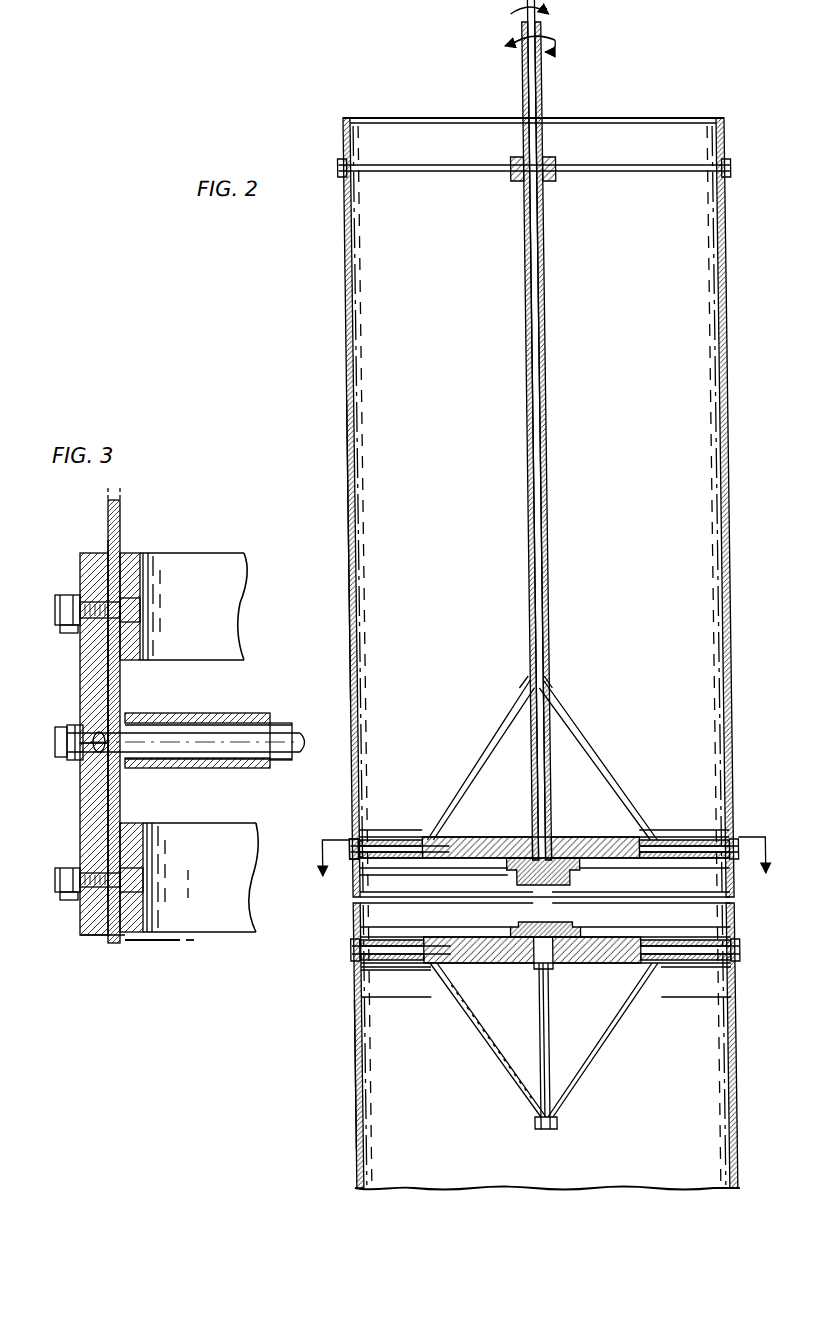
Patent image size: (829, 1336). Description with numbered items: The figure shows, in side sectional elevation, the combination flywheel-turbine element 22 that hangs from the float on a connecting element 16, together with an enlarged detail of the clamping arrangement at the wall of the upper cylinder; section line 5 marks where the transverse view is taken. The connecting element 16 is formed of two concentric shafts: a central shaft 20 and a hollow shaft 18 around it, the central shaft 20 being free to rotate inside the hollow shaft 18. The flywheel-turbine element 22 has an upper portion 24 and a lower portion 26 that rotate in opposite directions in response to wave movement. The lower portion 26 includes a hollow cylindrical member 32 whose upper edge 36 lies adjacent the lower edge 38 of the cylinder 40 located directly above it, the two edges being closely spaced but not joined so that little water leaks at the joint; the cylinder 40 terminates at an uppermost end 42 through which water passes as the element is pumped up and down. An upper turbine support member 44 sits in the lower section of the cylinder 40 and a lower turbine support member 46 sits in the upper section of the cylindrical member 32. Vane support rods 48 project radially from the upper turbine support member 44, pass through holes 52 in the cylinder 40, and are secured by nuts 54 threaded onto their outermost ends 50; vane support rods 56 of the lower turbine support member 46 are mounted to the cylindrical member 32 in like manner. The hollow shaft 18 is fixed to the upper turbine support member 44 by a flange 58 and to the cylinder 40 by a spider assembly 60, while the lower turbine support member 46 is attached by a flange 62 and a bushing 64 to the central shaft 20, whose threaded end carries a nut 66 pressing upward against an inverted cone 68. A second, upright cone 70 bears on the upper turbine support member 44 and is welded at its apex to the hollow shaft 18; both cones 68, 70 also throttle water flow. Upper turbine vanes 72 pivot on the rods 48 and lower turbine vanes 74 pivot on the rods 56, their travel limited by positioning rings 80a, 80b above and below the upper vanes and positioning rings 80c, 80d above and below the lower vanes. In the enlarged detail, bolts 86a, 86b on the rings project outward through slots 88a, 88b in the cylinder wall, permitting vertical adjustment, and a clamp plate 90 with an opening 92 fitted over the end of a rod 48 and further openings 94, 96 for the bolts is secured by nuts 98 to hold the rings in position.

In FIG. 2, the connecting element 16 is at (549, 34).
In FIG. 2, the hollow shaft 18 is at (542, 101).
In FIG. 2, the central shaft 20 is at (534, 200).
In FIG. 2, the flywheel-turbine element 22 is at (717, 84).
In FIG. 2, the upper portion 24 is at (343, 457).
In FIG. 3, the upper portion 24 is at (90, 507).
In FIG. 2, the lower portion 26 is at (343, 1160).
In FIG. 2, the cylindrical member 32 is at (340, 1063).
In FIG. 2, the upper edge 36 is at (344, 920).
In FIG. 2, the lower edge 38 is at (342, 888).
In FIG. 3, the lower edge 38 is at (145, 945).
In FIG. 2, the cylinder 40 is at (342, 651).
In FIG. 3, the cylinder 40 is at (120, 538).
In FIG. 2, the uppermost end 42 is at (340, 159).
In FIG. 2, the upper turbine support member 44 is at (576, 825).
In FIG. 2, the lower turbine support member 46 is at (626, 963).
In FIG. 2, the vane support rods 48 is at (438, 850).
In FIG. 3, the vane support rods 48 is at (292, 746).
In FIG. 3, the outermost end 50 is at (60, 752).
In FIG. 2, the holes 52 is at (338, 865).
In FIG. 3, the holes 52 is at (99, 743).
In FIG. 2, the nuts 54 is at (338, 848).
In FIG. 3, the nuts 54 is at (75, 735).
In FIG. 2, the vane support rods 56 is at (612, 935).
In FIG. 2, the flange 58 is at (557, 858).
In FIG. 2, the spider assembly 60 is at (567, 162).
In FIG. 2, the flange 62 is at (556, 935).
In FIG. 2, the bushing 64 is at (524, 972).
In FIG. 2, the nut 66 is at (545, 1125).
In FIG. 2, the inverted cone 68 is at (590, 1050).
In FIG. 2, the second cone 70 is at (576, 715).
In FIG. 2, the upper turbine vanes 72 is at (413, 835).
In FIG. 3, the upper turbine vanes 72 is at (262, 690).
In FIG. 2, the lower turbine vanes 74 is at (374, 962).
In FIG. 2, the positioning ring 80a is at (645, 815).
In FIG. 3, the positioning ring 80a is at (232, 540).
In FIG. 2, the positioning ring 80b is at (673, 872).
In FIG. 3, the positioning ring 80b is at (224, 920).
In FIG. 2, the positioning ring 80c is at (705, 913).
In FIG. 2, the positioning ring 80d is at (694, 985).
In FIG. 3, the bolt 86a is at (48, 612).
In FIG. 3, the bolt 86b is at (50, 876).
In FIG. 3, the slot 88a is at (124, 587).
In FIG. 3, the slot 88b is at (113, 940).
In FIG. 3, the clamp plate 90 is at (88, 935).
In FIG. 3, the opening 92 is at (98, 768).
In FIG. 3, the opening 94 is at (116, 612).
In FIG. 3, the opening 96 is at (123, 871).
In FIG. 3, the nuts 98 is at (68, 634).
In FIG. 2, the section line 5- 5 is at (542, 840).